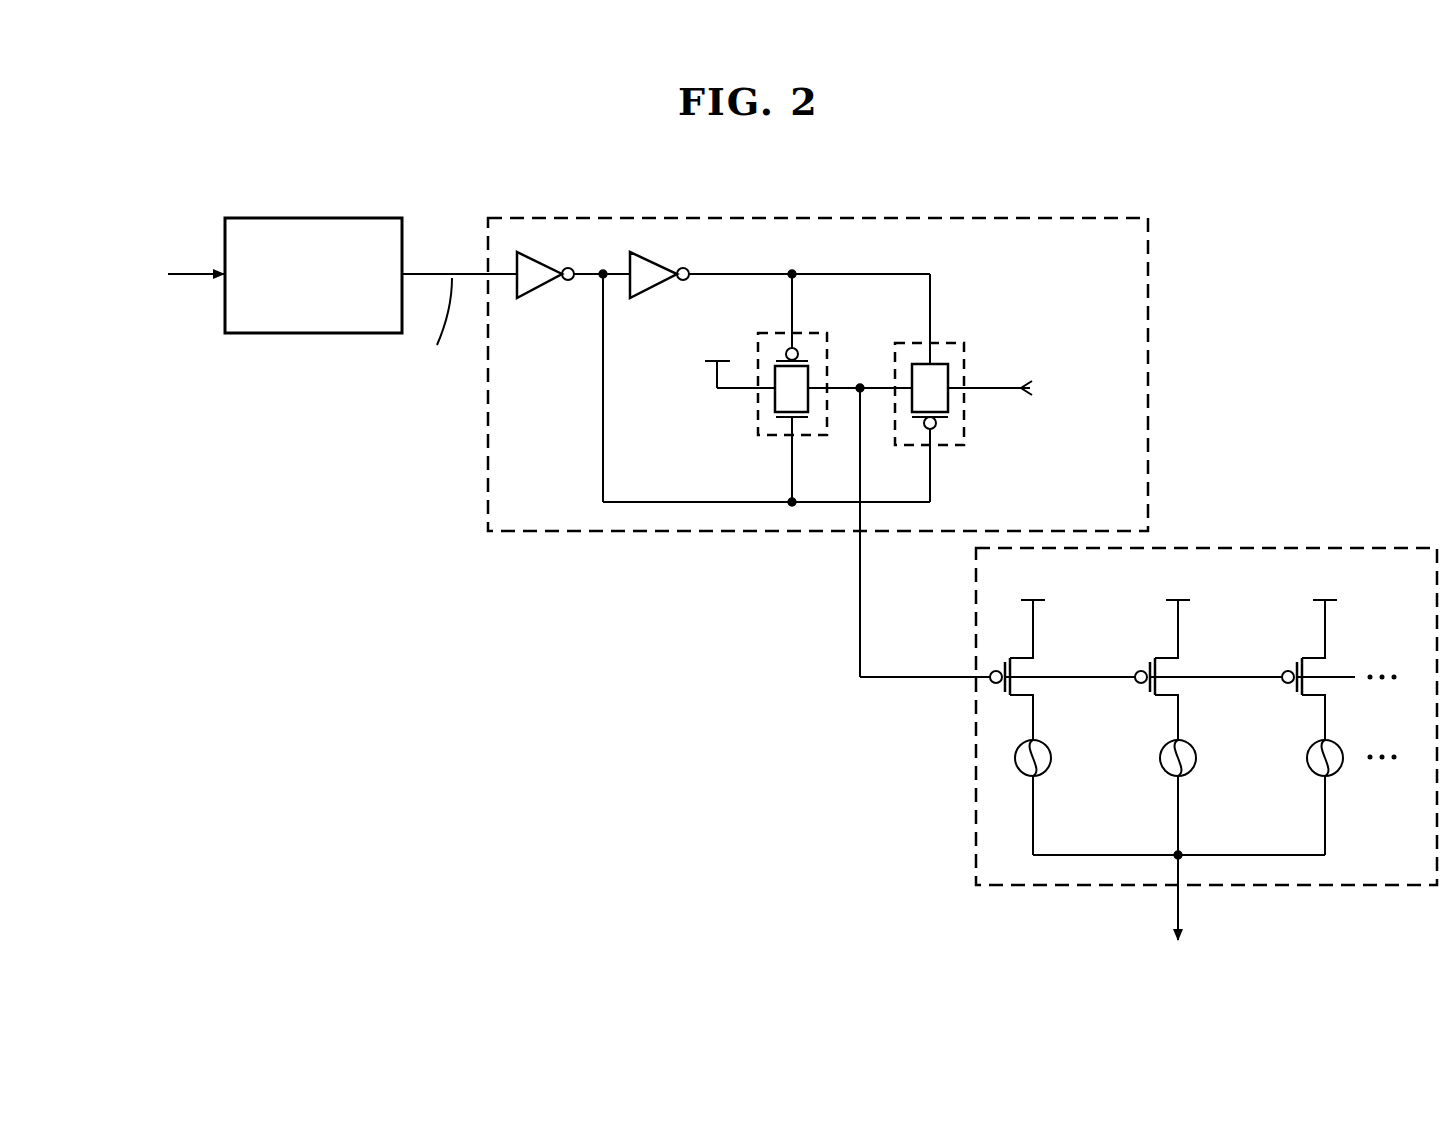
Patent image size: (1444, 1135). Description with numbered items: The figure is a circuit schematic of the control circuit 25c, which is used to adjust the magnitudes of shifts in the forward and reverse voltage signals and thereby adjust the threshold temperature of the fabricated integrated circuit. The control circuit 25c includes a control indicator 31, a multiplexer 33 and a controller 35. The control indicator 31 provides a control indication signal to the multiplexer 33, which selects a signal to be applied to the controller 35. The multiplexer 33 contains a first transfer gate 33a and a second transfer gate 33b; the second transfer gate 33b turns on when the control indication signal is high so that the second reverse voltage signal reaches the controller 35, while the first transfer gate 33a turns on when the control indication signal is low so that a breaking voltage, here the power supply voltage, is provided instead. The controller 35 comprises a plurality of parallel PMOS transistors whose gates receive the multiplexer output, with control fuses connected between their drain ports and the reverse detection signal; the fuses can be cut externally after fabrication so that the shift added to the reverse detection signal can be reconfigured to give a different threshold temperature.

The control circuit 25c is at (1305, 213).
The control indicator 31 is at (313, 218).
The multiplexer 33 is at (1148, 290).
The first transfer gate 33a is at (814, 333).
The second transfer gate 33b is at (951, 343).
The controller 35 is at (1260, 548).